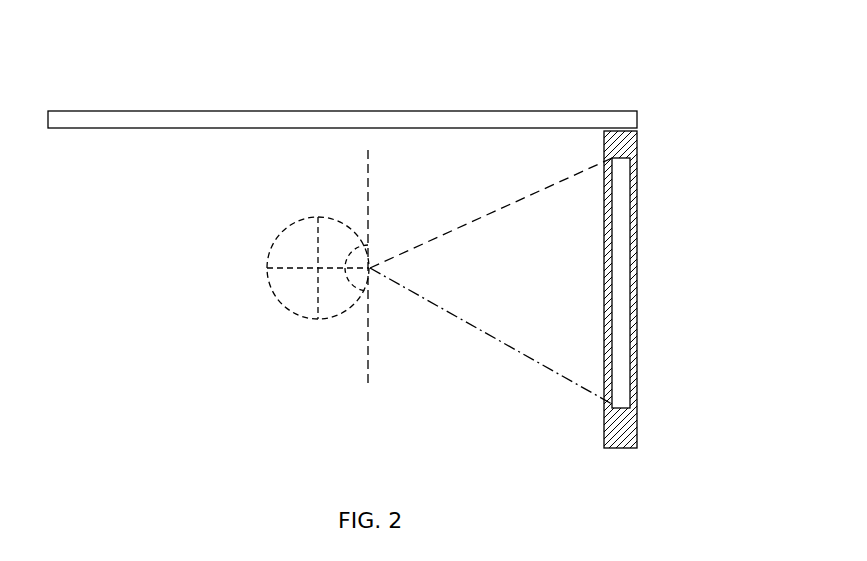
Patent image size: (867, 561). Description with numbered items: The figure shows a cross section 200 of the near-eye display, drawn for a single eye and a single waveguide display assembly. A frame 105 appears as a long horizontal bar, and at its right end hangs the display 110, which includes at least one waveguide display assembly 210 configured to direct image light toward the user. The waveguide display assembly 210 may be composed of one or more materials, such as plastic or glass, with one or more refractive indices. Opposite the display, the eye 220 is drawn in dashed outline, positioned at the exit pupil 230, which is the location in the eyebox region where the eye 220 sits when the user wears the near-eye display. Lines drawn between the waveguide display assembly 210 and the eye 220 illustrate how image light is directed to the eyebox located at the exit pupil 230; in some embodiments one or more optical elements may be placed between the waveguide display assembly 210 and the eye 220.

The cross section 200 is at (148, 88).
The frame 105 is at (521, 111).
The waveguide display assembly 210 is at (618, 182).
The display 110 is at (637, 355).
The eye 220 is at (290, 228).
The exit pupil 230 is at (362, 357).